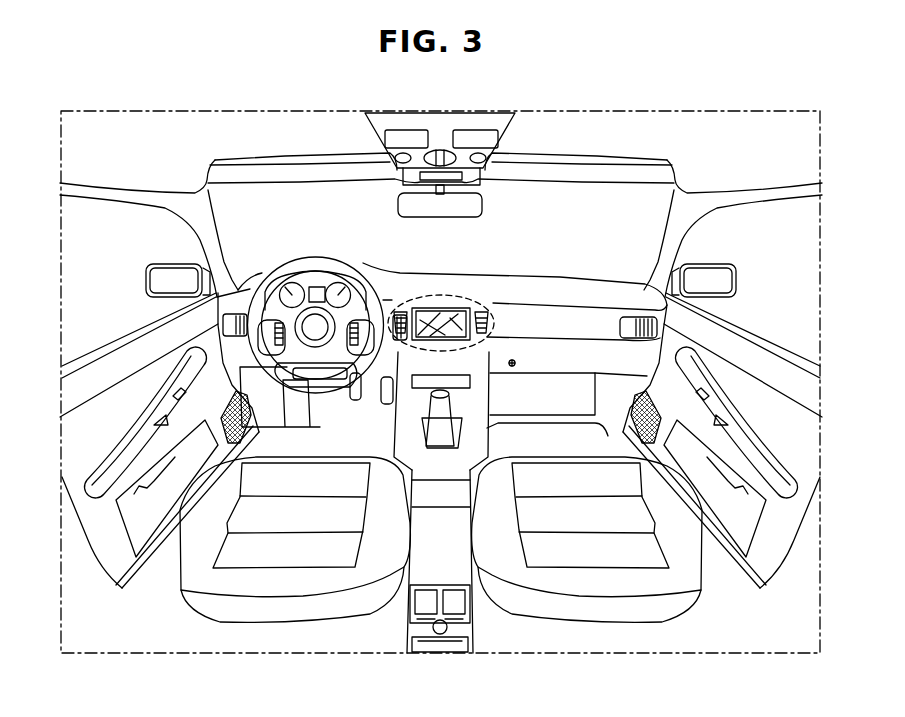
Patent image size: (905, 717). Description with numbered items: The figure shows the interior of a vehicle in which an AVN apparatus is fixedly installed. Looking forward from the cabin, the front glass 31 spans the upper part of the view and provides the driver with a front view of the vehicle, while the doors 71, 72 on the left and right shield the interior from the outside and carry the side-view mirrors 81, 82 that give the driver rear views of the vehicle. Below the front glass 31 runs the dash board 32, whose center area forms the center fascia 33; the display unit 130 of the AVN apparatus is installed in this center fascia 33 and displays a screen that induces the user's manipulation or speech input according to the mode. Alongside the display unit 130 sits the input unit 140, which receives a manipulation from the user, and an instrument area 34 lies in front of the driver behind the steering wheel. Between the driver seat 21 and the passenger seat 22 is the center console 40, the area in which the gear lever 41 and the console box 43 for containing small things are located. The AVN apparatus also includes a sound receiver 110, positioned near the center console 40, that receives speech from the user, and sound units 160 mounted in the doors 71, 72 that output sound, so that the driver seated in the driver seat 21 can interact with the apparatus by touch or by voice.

The driver seat 21 is at (281, 588).
The passenger seat 22 is at (602, 588).
The front glass 31 is at (639, 197).
The dash board 32 is at (567, 287).
The center fascia 33 is at (465, 300).
The instrument cluster 34 is at (358, 277).
The center console 40 is at (483, 411).
The gear lever 41 is at (433, 431).
The console box 43 is at (458, 543).
The door 71 is at (82, 430).
The door 72 is at (800, 430).
The side-view mirror 81 is at (146, 283).
The side-view mirror 82 is at (736, 285).
The sound receiver 110 is at (458, 495).
The display unit 130 is at (437, 307).
The input unit 140 is at (478, 303).
The sound unit 160 is at (247, 427).